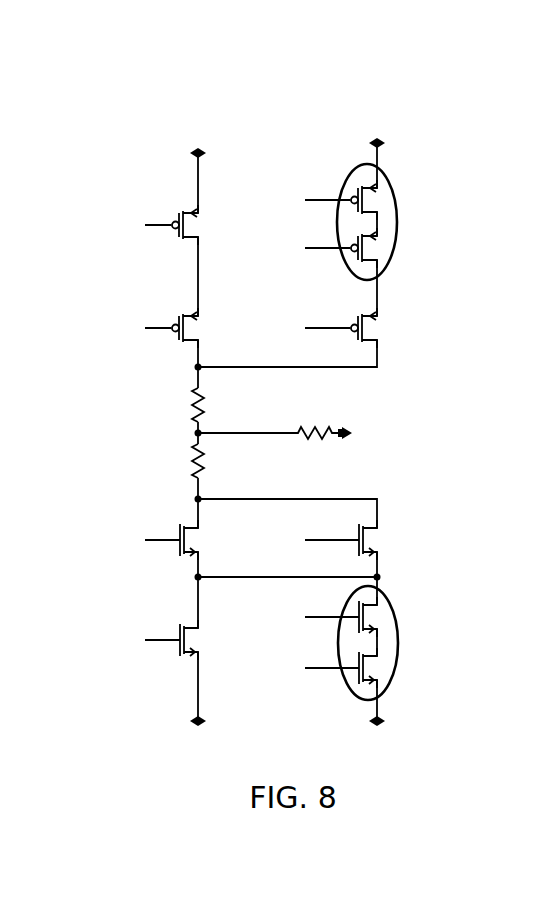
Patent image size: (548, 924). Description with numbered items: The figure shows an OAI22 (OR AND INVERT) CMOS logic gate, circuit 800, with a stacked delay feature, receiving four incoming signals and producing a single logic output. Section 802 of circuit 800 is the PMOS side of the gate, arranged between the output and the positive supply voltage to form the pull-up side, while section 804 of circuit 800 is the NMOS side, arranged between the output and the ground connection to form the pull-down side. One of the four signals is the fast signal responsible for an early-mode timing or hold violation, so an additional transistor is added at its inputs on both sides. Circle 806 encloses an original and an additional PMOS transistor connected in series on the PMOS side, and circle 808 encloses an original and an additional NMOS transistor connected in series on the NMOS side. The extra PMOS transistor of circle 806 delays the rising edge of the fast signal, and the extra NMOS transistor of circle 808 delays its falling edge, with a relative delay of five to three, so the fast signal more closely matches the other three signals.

The circuit 800 is at (292, 95).
The section 802 is at (130, 133).
The section 804 is at (130, 435).
The circle 806 is at (352, 170).
The circle 808 is at (347, 688).